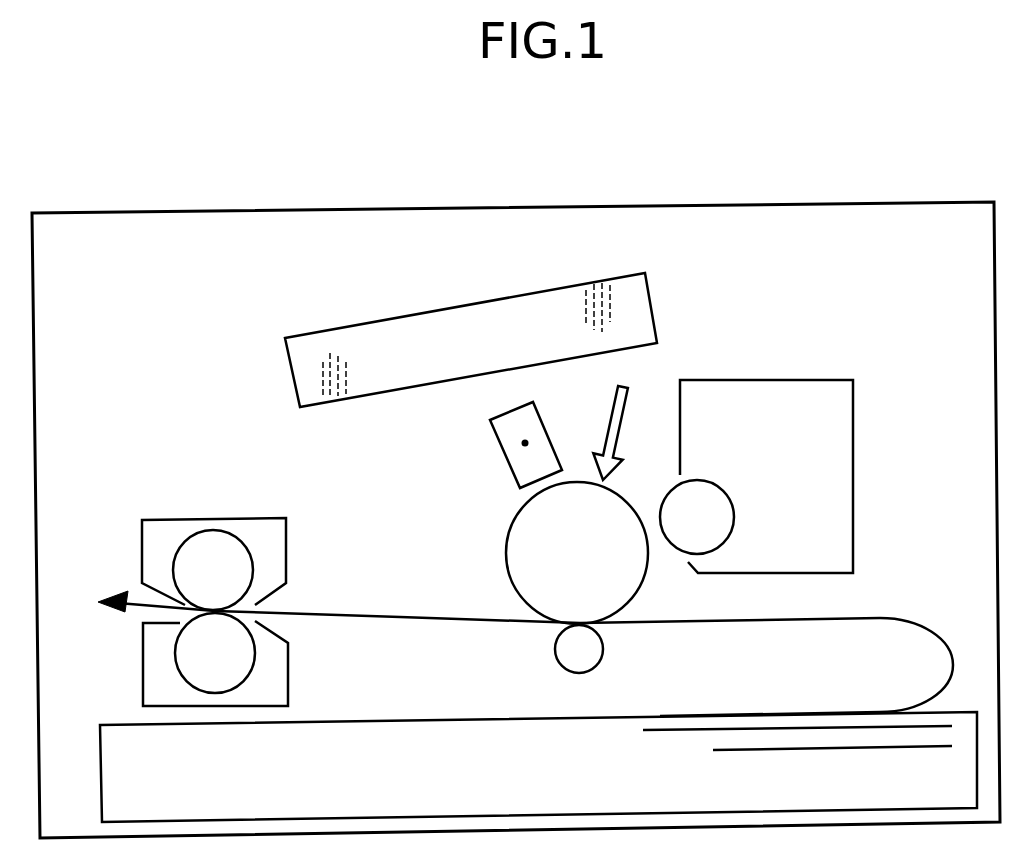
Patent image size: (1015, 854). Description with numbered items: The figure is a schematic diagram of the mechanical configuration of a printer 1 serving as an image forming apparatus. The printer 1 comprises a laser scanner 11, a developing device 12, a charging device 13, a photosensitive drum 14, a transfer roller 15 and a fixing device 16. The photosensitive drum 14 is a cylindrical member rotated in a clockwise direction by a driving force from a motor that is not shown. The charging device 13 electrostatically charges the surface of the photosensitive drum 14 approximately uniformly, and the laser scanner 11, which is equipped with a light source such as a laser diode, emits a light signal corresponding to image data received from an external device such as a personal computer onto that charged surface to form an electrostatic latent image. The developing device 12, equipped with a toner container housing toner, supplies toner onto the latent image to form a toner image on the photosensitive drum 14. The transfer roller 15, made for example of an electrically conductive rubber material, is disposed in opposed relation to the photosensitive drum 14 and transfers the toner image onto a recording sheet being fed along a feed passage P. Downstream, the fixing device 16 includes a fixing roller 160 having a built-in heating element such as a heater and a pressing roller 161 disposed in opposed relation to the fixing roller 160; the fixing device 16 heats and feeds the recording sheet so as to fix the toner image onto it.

The printer 1 is at (690, 203).
The laser scanner 11 is at (405, 315).
The developing device 12 is at (747, 380).
The charging device 13 is at (508, 465).
The photosensitive drum 14 is at (513, 590).
The transfer roller 15 is at (605, 648).
The fixing device 16 is at (171, 568).
The fixing roller 160 is at (176, 565).
The pressing roller 161 is at (178, 663).
The feed passage P is at (890, 617).